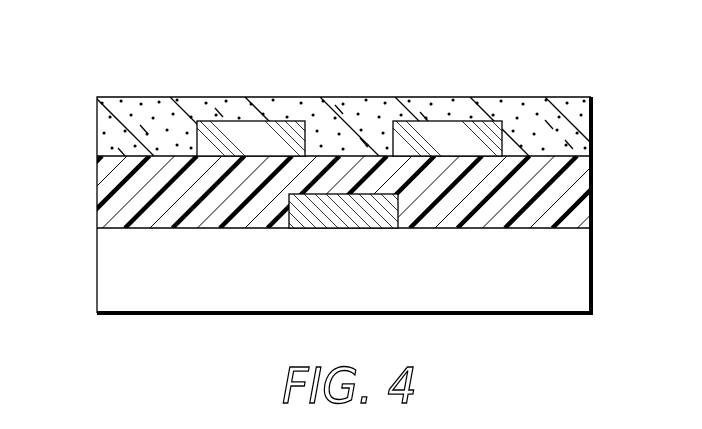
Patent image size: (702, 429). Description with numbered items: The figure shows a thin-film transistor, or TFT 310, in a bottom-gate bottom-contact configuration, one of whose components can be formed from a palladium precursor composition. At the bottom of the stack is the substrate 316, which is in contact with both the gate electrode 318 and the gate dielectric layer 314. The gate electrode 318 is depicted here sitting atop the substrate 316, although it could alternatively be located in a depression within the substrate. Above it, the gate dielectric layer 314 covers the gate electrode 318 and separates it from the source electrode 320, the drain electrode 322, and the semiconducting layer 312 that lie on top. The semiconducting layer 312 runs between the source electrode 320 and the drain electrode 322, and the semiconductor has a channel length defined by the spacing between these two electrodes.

The TFT 310 is at (122, 60).
The semiconducting layer 312 is at (583, 128).
The gate dielectric layer 314 is at (90, 157).
The substrate 316 is at (583, 270).
The gate electrode 318 is at (350, 220).
The source electrode 320 is at (273, 148).
The drain electrode 322 is at (470, 148).